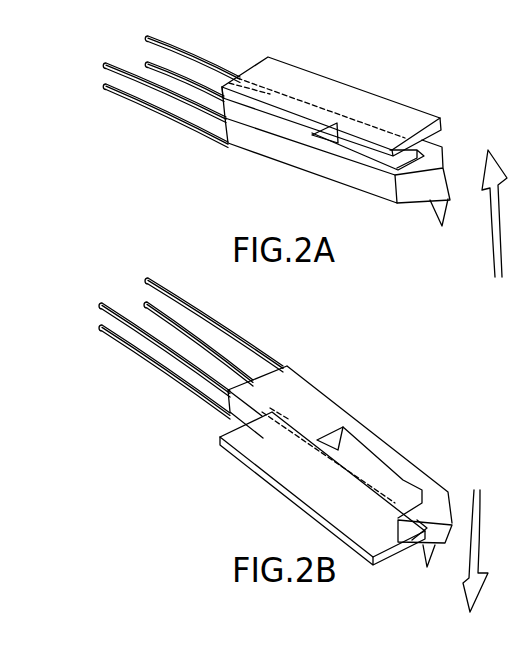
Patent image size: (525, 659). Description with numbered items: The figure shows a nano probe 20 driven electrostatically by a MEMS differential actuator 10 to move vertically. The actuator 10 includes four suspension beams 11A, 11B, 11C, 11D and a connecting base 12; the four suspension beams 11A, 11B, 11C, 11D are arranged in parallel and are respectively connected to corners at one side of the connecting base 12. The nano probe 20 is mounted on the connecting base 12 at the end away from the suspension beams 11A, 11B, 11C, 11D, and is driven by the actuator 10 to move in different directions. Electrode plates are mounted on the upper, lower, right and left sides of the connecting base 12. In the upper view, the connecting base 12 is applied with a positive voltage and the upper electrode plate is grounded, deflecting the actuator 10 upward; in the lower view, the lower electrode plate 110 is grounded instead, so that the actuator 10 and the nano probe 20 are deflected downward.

In FIG. 2A, the MEMS differential actuator 10 is at (331, 159).
In FIG. 2B, the MEMS differential actuator 10 is at (333, 471).
In FIG. 2A, the suspension beam 11A is at (108, 62).
In FIG. 2B, the suspension beam 11A is at (103, 302).
In FIG. 2A, the suspension beam 11B is at (168, 43).
In FIG. 2B, the suspension beam 11B is at (167, 282).
In FIG. 2A, the suspension beam 11C is at (108, 89).
In FIG. 2B, the suspension beam 11C is at (103, 325).
In FIG. 2A, the suspension beam 11D is at (150, 62).
In FIG. 2B, the suspension beam 11D is at (147, 302).
In FIG. 2A, the connecting base 12 is at (252, 143).
In FIG. 2B, the connecting base 12 is at (310, 402).
In FIG. 2A, the nano probe 20 is at (437, 217).
In FIG. 2B, the nano probe 20 is at (422, 555).
In FIG. 2A, the electrode plate 110 is at (370, 102).
In FIG. 2B, the electrode plate 110 is at (272, 478).